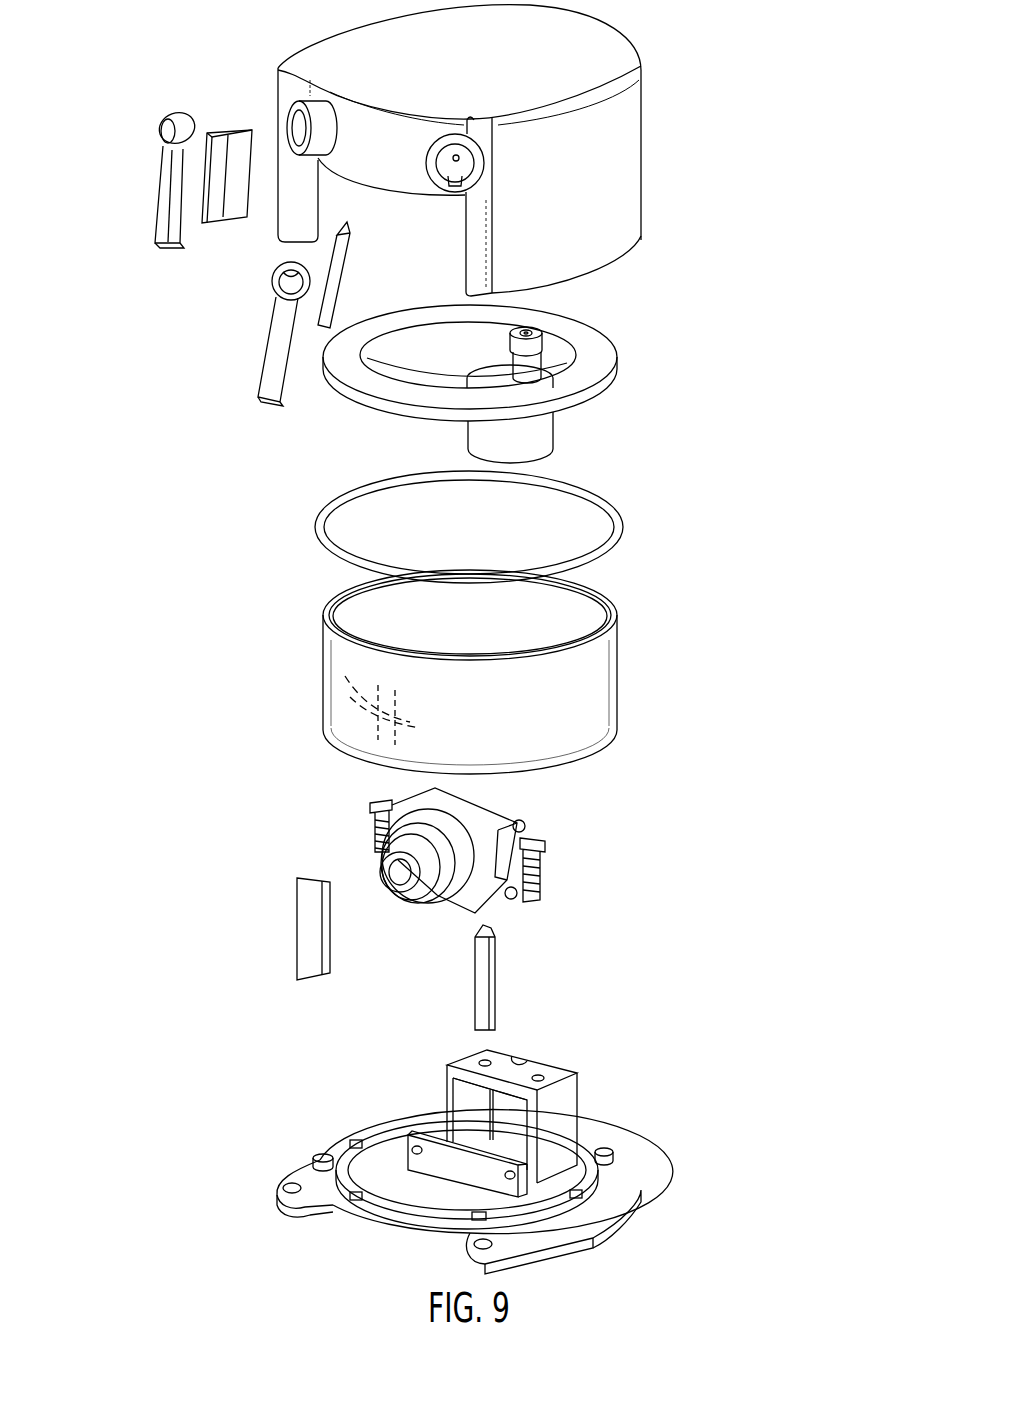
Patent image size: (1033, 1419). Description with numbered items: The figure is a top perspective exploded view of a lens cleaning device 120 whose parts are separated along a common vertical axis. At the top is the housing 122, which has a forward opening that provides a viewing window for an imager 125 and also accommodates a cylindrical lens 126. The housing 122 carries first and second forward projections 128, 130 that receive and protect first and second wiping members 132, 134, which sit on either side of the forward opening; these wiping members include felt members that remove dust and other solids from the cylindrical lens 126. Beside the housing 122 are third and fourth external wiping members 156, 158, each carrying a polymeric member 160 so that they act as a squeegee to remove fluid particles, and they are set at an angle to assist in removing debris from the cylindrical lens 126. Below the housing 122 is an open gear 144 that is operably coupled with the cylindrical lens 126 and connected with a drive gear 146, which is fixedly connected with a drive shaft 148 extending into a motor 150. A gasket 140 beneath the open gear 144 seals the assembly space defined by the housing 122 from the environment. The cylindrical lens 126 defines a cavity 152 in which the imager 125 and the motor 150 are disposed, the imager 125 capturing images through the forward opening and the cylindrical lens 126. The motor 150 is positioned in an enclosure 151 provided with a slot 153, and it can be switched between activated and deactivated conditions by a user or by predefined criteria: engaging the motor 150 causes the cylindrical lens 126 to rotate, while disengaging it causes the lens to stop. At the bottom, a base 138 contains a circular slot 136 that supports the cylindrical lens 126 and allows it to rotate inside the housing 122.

The lens cleaning device 120 is at (680, 34).
The housing 122 is at (620, 181).
The imager 125 is at (497, 820).
The cylindrical lens 126 is at (595, 680).
The first forward projection 128 is at (282, 110).
The second forward projection 130 is at (466, 291).
The first wiping member 132 is at (308, 943).
The second wiping member 134 is at (484, 990).
The circular slot 136 is at (605, 1170).
The base 138 is at (622, 1220).
The gasket 140 is at (600, 500).
The open gear 144 is at (590, 368).
The drive gear 146 is at (548, 347).
The drive shaft 148 is at (527, 335).
The motor 150 is at (547, 432).
The enclosure 151 is at (565, 1105).
The cavity 152 is at (588, 613).
The slot 153 is at (528, 1068).
The third external wiping member 156 is at (172, 243).
The fourth external wiping member 158 is at (277, 378).
The polymeric member 160 is at (217, 217).